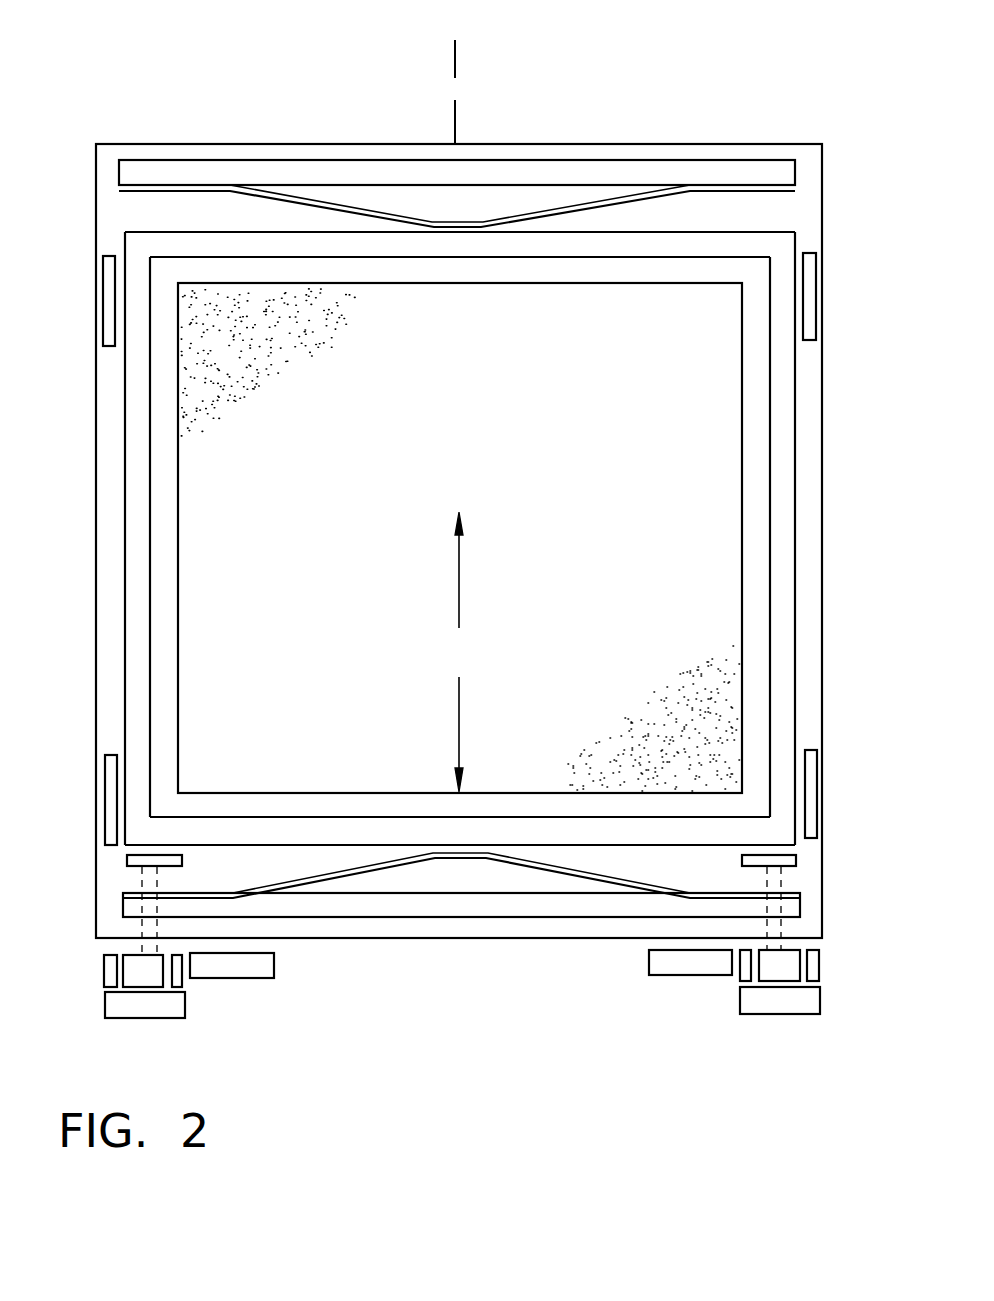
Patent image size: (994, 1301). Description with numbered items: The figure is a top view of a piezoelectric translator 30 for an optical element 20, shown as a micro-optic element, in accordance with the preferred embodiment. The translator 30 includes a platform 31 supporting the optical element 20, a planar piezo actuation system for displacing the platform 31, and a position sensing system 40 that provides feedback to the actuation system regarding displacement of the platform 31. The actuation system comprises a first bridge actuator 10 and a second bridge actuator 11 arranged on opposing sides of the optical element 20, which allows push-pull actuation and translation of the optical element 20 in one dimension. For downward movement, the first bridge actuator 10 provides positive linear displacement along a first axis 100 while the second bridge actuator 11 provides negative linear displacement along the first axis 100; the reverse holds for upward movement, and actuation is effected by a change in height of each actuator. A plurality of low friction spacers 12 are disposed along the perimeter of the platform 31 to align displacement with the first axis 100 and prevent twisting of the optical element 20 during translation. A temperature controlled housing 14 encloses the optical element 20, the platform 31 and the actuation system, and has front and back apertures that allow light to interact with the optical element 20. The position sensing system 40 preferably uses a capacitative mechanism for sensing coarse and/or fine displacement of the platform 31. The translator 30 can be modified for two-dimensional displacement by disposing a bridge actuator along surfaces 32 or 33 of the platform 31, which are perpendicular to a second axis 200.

The first bridge actuator 10 is at (795, 172).
The second bridge actuator 11 is at (800, 903).
The low friction spacers 12 is at (108, 298).
The temperature controlled housing 14 is at (97, 453).
The optical element 20 is at (659, 468).
The piezoelectric translator 30 is at (468, 26).
The platform 31 is at (780, 243).
The surface of platform 32 is at (126, 628).
The surface of platform 33 is at (795, 673).
The position sensing system 40 is at (280, 995).
The first axis 100 is at (452, 84).
The second axis 200 is at (822, 528).